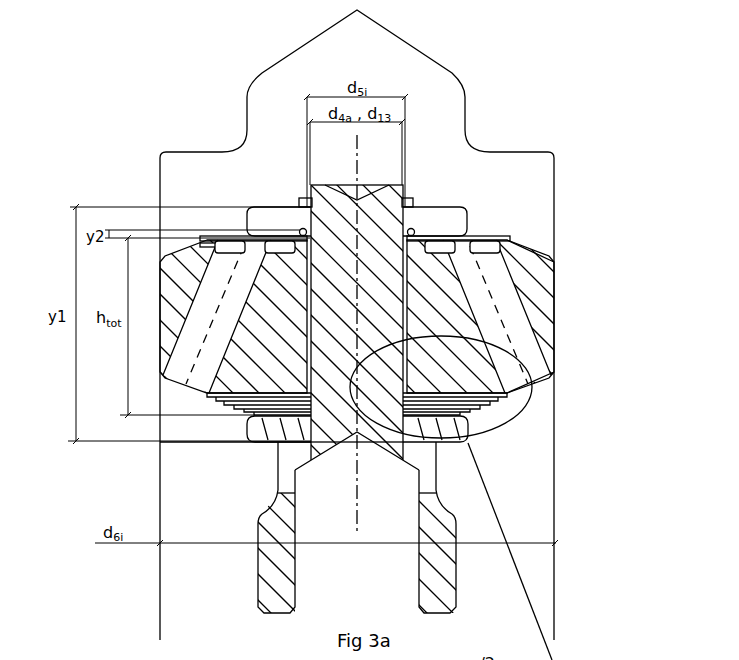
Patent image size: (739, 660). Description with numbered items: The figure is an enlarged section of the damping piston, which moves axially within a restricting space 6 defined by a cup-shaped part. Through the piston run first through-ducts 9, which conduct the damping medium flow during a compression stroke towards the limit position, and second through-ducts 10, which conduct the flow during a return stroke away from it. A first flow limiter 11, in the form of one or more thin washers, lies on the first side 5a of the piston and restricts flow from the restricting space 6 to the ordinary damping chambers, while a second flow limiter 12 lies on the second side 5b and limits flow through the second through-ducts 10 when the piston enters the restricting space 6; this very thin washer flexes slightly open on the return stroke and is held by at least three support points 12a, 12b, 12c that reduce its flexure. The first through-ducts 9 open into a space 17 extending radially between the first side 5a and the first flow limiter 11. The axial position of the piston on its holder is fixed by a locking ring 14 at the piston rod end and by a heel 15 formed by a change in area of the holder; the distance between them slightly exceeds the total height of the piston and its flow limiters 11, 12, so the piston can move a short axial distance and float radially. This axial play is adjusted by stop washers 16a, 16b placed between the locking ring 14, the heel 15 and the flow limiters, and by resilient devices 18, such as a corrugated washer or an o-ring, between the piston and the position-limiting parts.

The restricting space 6 is at (437, 163).
The locking ring 14 is at (413, 204).
The stop washer 16a is at (445, 215).
The resilient device 18 is at (447, 234).
The second flow limiter 12 is at (415, 235).
The support point 12a is at (285, 240).
The support point 12b is at (252, 240).
The support point 12c is at (207, 243).
The second side of the damping piston 5b is at (508, 243).
The first through-duct 9 is at (525, 288).
The second through-duct 10 is at (518, 342).
The first side of the damping piston 5a is at (507, 393).
The first flow limiter 11 is at (474, 404).
The stop washer 16b is at (469, 441).
The heel 15 is at (468, 443).
The space 17 is at (468, 443).